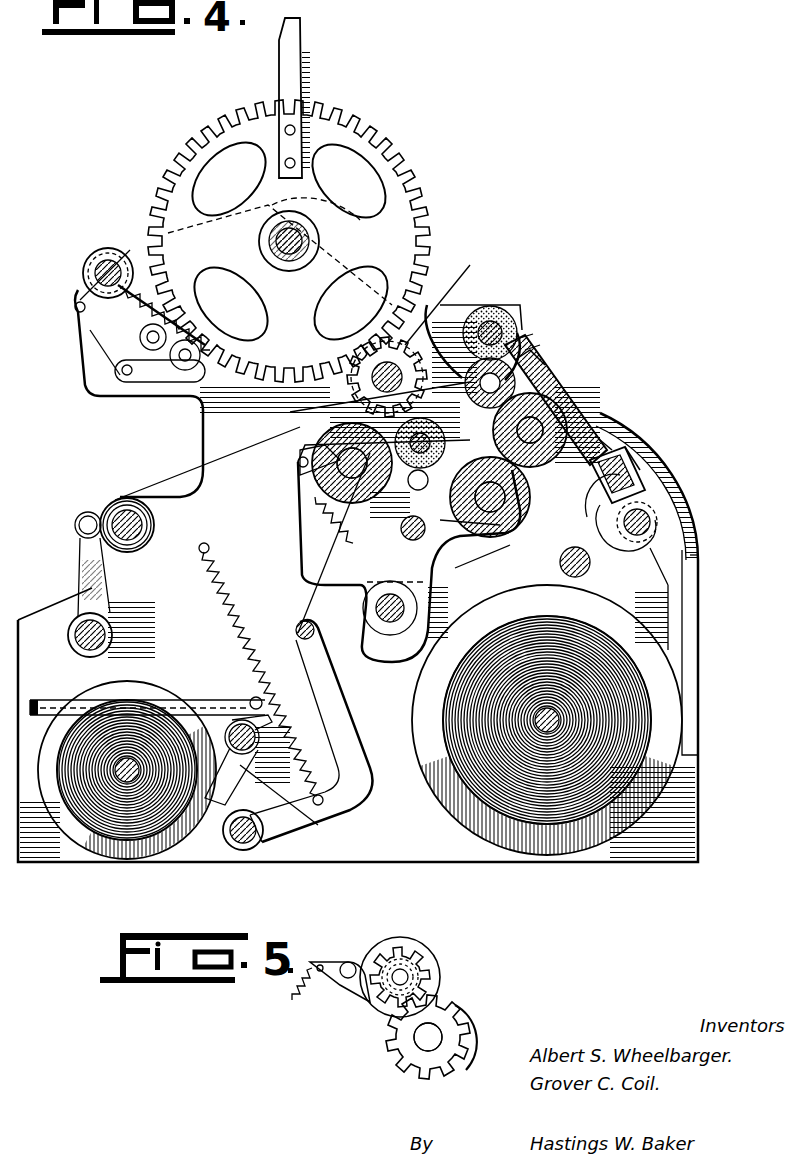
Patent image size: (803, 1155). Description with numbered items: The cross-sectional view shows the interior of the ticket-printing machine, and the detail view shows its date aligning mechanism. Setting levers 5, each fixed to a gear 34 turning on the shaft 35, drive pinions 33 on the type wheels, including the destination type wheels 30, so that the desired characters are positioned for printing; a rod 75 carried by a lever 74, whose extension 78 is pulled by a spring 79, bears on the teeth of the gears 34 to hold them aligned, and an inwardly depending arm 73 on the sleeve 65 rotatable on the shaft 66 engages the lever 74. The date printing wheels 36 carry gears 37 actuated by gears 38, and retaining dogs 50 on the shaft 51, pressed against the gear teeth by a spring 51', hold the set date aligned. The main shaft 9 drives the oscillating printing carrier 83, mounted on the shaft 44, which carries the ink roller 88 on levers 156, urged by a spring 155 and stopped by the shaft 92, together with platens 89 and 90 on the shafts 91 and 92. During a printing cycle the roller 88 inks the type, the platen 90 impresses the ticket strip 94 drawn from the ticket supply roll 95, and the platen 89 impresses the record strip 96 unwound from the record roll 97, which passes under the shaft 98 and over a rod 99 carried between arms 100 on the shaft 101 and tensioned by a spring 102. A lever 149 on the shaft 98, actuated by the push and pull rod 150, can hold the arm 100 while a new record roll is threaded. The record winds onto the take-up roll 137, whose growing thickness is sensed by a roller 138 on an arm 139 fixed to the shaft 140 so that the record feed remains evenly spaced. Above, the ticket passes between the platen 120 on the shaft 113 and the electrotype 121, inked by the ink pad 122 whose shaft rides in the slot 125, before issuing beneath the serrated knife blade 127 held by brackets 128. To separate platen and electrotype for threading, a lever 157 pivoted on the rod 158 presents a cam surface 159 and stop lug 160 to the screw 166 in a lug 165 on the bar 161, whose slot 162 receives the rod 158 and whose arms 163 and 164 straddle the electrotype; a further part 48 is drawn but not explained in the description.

In FIG. 4, the lever 5 is at (298, 40).
In FIG. 4, the shaft 9 is at (690, 552).
In FIG. 4, the type wheel 30 is at (320, 402).
In FIG. 4, the pinion 33 is at (348, 362).
In FIG. 4, the gear 34 is at (348, 128).
In FIG. 4, the shaft 35 is at (310, 235).
In FIG. 5, the date printing wheel 36 is at (390, 1052).
In FIG. 5, the gear 37 is at (445, 1020).
In FIG. 5, the gear 38 is at (412, 955).
In FIG. 4, the shaft 44 is at (388, 622).
In FIG. 4, the shaft 48 is at (412, 330).
In FIG. 5, the shaft 48 is at (428, 1045).
In FIG. 5, the retaining dog 50 is at (350, 985).
In FIG. 5, the shaft 51 is at (355, 948).
In FIG. 5, the spring 51' is at (301, 998).
In FIG. 4, the sleeve 65 is at (108, 265).
In FIG. 4, the shaft 66 is at (98, 268).
In FIG. 4, the arm 73 is at (120, 350).
In FIG. 4, the lever 74 is at (135, 320).
In FIG. 4, the rod 75 is at (182, 370).
In FIG. 4, the extension 78 is at (80, 300).
In FIG. 4, the spring 79 is at (100, 335).
In FIG. 4, the oscillating printing carrier 83 is at (360, 570).
In FIG. 4, the ink roller 88 is at (395, 510).
In FIG. 4, the platen 89 is at (300, 500).
In FIG. 4, the platen 90 is at (470, 535).
In FIG. 4, the shaft 91 is at (310, 455).
In FIG. 4, the shaft 92 is at (505, 530).
In FIG. 4, the ticket strip 94 is at (490, 560).
In FIG. 4, the ticket supply roll 95 is at (596, 630).
In FIG. 4, the record strip 96 is at (330, 585).
In FIG. 4, the record roll 97 is at (155, 718).
In FIG. 4, the shaft 98 is at (238, 720).
In FIG. 4, the rod 99 is at (296, 628).
In FIG. 4, the arm 100 is at (360, 790).
In FIG. 4, the shaft 101 is at (250, 845).
In FIG. 4, the spring 102 is at (245, 615).
In FIG. 4, the shaft 113 is at (565, 405).
In FIG. 4, the platen 120 is at (560, 430).
In FIG. 4, the electrotype 121 is at (515, 378).
In FIG. 4, the ink pad 122 is at (512, 305).
In FIG. 4, the slot 125 is at (478, 307).
In FIG. 4, the serrated knife blade 127 is at (545, 366).
In FIG. 4, the bracket 128 is at (560, 385).
In FIG. 4, the take-up roll 137 is at (145, 520).
In FIG. 4, the roller 138 is at (82, 512).
In FIG. 4, the arm 139 is at (82, 563).
In FIG. 4, the shaft 140 is at (70, 636).
In FIG. 4, the lever 149 is at (312, 818).
In FIG. 4, the push and pull rod 150 is at (45, 700).
In FIG. 4, the spring 155 is at (320, 520).
In FIG. 4, the lever 156 is at (428, 470).
In FIG. 4, the lever 157 is at (668, 580).
In FIG. 4, the rod 158 is at (650, 520).
In FIG. 4, the cam surface 159 is at (640, 505).
In FIG. 4, the stop lug 160 is at (598, 528).
In FIG. 4, the bar 161 is at (600, 460).
In FIG. 4, the slot 162 is at (645, 490).
In FIG. 4, the arm 163 is at (530, 350).
In FIG. 4, the arm 164 is at (452, 305).
In FIG. 4, the lug 165 is at (630, 460).
In FIG. 4, the screw 166 is at (618, 452).